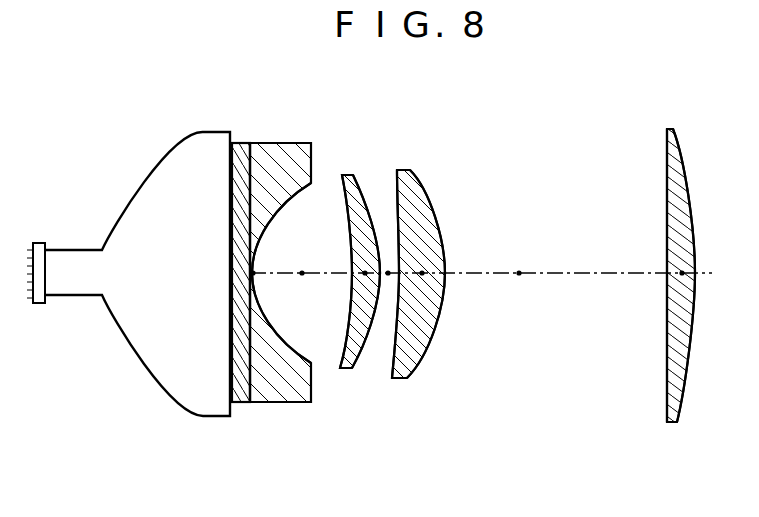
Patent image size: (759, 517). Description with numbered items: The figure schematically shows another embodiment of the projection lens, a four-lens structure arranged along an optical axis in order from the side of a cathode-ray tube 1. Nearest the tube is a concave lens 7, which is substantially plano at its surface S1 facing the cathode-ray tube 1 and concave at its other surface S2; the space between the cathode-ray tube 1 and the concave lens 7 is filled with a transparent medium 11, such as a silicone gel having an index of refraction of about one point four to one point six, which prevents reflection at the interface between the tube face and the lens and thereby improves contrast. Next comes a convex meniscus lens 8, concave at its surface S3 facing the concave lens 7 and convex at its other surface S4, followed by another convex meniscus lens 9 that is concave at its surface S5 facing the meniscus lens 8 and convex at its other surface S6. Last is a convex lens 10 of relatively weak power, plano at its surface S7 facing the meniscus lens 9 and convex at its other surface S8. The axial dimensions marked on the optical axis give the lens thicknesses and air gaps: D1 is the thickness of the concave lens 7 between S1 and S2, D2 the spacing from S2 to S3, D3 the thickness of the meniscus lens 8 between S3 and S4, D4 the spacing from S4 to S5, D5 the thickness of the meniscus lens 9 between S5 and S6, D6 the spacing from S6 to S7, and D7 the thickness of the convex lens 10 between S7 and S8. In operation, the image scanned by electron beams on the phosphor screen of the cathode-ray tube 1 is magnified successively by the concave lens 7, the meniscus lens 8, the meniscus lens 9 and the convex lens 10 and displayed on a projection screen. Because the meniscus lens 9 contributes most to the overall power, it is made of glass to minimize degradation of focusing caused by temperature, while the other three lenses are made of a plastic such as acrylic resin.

The cathode-ray tube 1 is at (140, 195).
The concave lens L1 7 is at (268, 403).
The convex meniscus lens L2 8 is at (344, 370).
The convex meniscus lens L3 9 is at (400, 380).
The convex lens L4 10 is at (673, 424).
The transparent medium 11 is at (233, 403).
The surface S1 is at (250, 152).
The surface S2 is at (309, 192).
The surface S3 is at (348, 207).
The surface S4 is at (366, 205).
The surface S5 is at (398, 190).
The surface S6 is at (414, 186).
The surface S7 is at (667, 150).
The surface S8 is at (676, 142).
The distance between surfaces S1 and S2 D1 is at (256, 270).
The distance between surfaces S2 and S3 D2 is at (302, 276).
The distance between surfaces S3 and S4 D3 is at (364, 276).
The distance between surfaces S4 and S5 D4 is at (388, 271).
The distance between surfaces S5 and S6 D5 is at (422, 276).
The distance between surfaces S6 and S7 D6 is at (519, 276).
The distance between surfaces S7 and S8 D7 is at (682, 276).